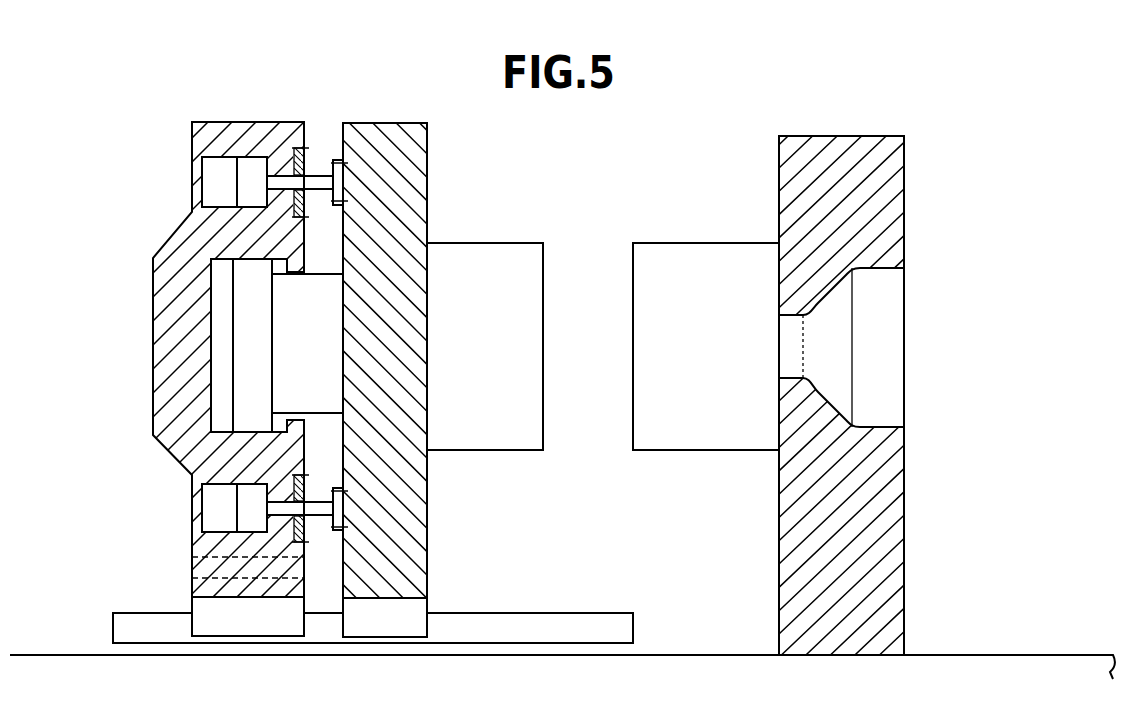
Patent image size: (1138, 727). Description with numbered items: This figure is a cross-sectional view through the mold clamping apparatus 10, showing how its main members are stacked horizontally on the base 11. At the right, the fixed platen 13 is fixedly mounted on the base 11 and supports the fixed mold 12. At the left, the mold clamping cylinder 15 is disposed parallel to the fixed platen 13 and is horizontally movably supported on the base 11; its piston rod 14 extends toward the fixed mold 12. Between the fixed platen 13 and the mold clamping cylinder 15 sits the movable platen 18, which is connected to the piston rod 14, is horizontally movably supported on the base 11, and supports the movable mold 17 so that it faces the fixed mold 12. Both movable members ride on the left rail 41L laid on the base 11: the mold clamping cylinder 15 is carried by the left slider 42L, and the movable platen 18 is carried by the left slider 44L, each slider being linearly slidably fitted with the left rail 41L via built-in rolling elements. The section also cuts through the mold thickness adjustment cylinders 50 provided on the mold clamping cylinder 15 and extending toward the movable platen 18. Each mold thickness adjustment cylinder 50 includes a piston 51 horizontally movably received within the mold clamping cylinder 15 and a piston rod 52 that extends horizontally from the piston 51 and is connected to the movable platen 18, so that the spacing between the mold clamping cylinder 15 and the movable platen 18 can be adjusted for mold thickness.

The mold clamping apparatus 10 is at (962, 133).
The base 11 is at (1023, 654).
The fixed mold 12 is at (708, 257).
The fixed platen 13 is at (845, 136).
The piston rod 14 is at (295, 338).
The mold clamping cylinder 15 is at (250, 127).
The movable mold 17 is at (490, 257).
The movable platen 18 is at (392, 128).
The left rail 41L is at (580, 621).
The left slider 42L is at (200, 605).
The left slider 44L is at (420, 606).
The mold thickness adjustment cylinder 50 is at (186, 151).
The piston 51 is at (245, 178).
The piston rod 52 is at (323, 178).